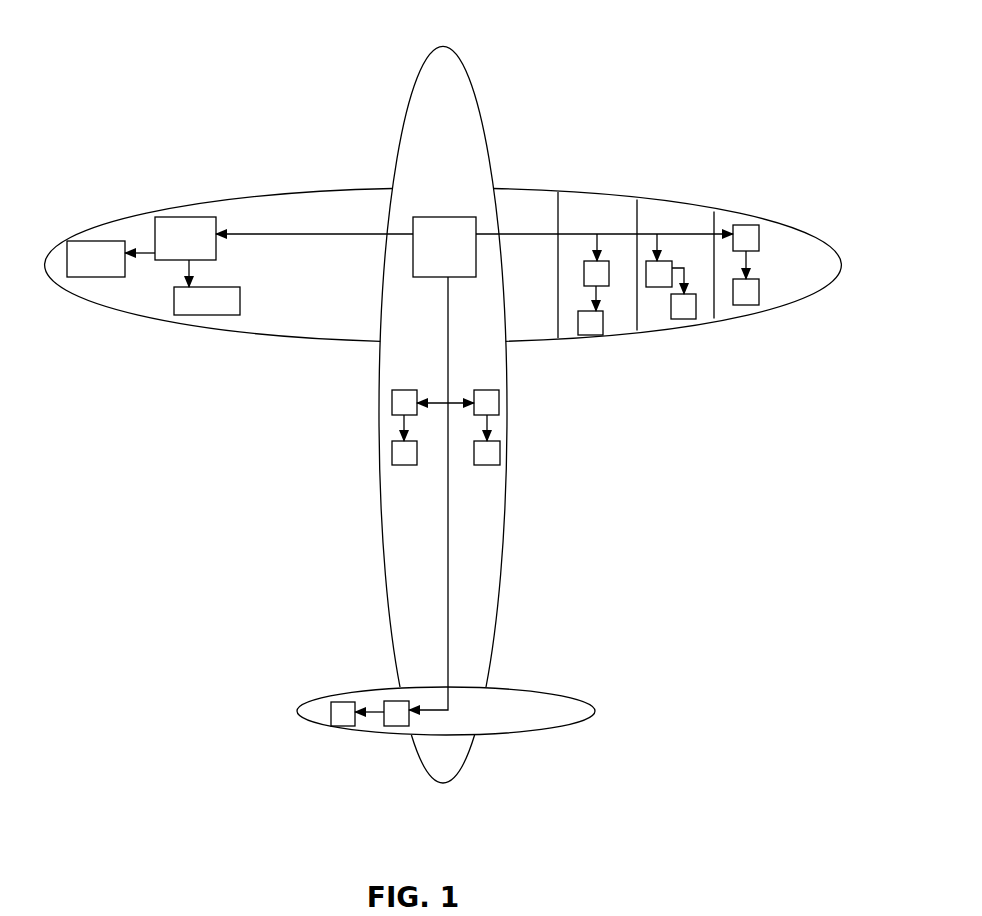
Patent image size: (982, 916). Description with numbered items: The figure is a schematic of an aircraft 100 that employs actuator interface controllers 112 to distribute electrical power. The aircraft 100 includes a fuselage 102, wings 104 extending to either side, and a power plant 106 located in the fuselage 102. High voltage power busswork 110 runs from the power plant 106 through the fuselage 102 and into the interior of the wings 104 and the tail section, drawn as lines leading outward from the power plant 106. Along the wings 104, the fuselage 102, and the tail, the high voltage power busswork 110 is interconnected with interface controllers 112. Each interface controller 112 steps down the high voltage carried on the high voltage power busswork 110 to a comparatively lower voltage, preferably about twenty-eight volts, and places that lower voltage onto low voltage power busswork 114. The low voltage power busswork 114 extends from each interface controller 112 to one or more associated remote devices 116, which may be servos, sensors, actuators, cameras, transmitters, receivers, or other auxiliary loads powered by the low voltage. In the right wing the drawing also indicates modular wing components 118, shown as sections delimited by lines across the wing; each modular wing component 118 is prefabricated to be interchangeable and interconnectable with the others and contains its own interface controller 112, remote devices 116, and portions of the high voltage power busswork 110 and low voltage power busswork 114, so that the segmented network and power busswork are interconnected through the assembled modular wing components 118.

The aircraft 100 is at (588, 65).
The fuselage 102 is at (520, 525).
The wings 104 is at (537, 183).
The power plant 106 is at (444, 247).
The high voltage power busswork 110 is at (323, 218).
The interface controllers 112 is at (790, 189).
The low voltage power busswork 114 is at (136, 232).
The remote devices 116 is at (583, 390).
The modular wing components 118 is at (736, 323).